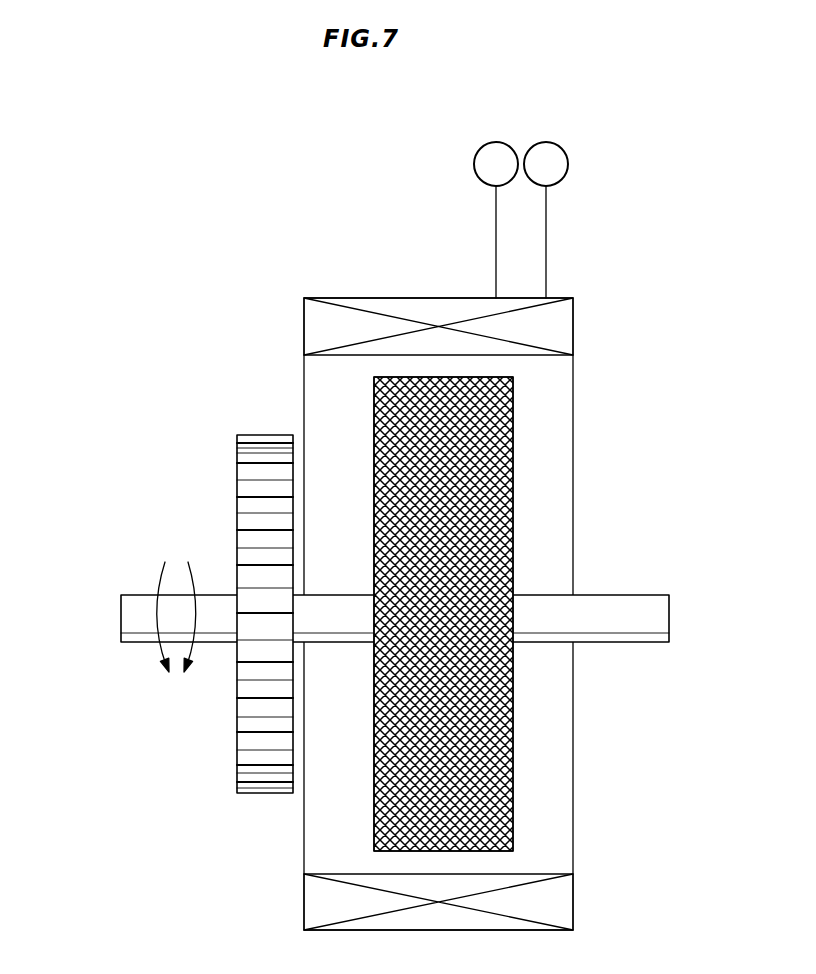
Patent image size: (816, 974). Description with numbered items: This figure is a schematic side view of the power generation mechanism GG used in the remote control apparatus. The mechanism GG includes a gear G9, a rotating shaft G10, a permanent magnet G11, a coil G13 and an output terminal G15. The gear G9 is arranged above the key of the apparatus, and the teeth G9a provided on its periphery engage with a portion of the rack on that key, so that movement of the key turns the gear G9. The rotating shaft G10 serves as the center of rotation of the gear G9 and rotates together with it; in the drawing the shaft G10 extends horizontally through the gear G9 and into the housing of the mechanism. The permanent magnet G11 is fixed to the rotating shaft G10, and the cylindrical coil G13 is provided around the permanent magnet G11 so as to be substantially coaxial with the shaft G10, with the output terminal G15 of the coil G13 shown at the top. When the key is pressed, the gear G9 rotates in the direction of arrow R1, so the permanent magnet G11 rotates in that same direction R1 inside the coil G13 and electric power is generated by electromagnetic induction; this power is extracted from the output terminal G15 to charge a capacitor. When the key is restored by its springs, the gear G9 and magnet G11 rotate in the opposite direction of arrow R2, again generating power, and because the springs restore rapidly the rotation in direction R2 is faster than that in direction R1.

The power generation mechanism GG is at (316, 252).
The gear G9 is at (212, 557).
The teeth G9a is at (245, 448).
The rotating shaft G10 is at (128, 617).
The permanent magnet G11 is at (515, 490).
The coil G13 is at (572, 325).
The output terminal G15 is at (545, 225).
The arrow R1 (direction of rotation) R1 is at (155, 652).
The arrow R2 (direction of rotation) R2 is at (203, 652).